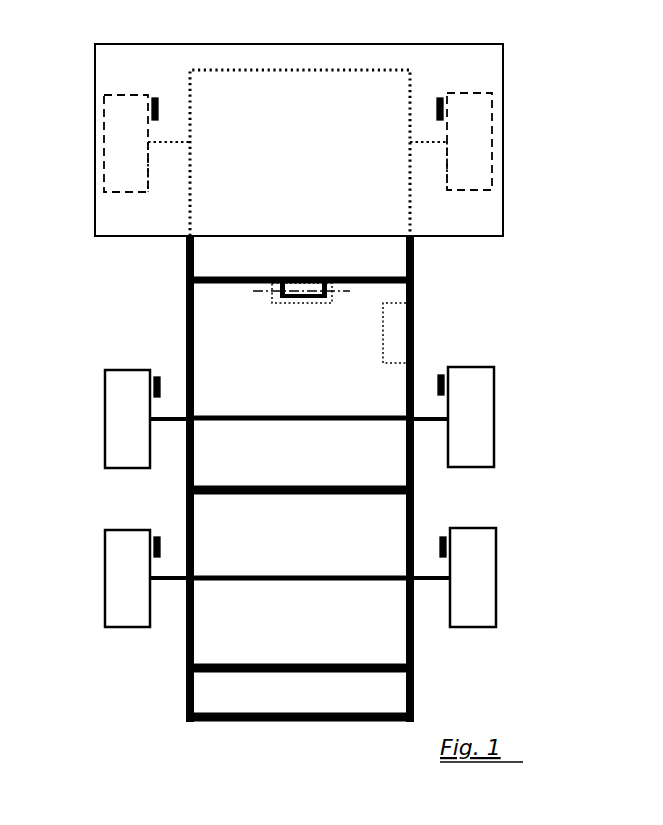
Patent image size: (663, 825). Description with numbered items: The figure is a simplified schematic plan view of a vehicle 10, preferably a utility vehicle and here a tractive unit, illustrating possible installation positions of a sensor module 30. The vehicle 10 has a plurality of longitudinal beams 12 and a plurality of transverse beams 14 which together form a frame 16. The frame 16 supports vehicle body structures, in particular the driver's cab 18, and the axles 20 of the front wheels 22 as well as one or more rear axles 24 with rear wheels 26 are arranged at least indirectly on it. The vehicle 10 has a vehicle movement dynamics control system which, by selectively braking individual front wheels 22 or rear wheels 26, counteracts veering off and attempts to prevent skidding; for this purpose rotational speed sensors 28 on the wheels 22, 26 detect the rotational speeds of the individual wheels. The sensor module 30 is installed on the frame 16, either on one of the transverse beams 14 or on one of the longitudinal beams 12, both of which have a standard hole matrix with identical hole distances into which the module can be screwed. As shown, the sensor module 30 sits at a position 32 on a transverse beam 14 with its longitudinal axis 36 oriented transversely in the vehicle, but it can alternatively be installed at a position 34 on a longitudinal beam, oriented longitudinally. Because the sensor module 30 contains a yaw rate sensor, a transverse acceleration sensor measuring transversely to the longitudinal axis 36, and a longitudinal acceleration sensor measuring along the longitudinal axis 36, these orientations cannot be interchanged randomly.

The vehicle 10 is at (355, 35).
The longitudinal beams 12 is at (185, 262).
The transverse beams 14 is at (274, 72).
The frame 16 is at (329, 722).
The driver's cab 18 is at (503, 70).
The axles of the front wheels 20 is at (170, 148).
The front wheels 22 is at (118, 150).
The rear axles 24 is at (170, 425).
The rear wheels 26 is at (120, 421).
The rotational speed sensors 28 is at (160, 108).
The sensor module 30 is at (307, 300).
The position on a transverse beam 32 is at (322, 303).
The position on a longitudinal beam 34 is at (383, 320).
The longitudinal axis 36 is at (338, 291).